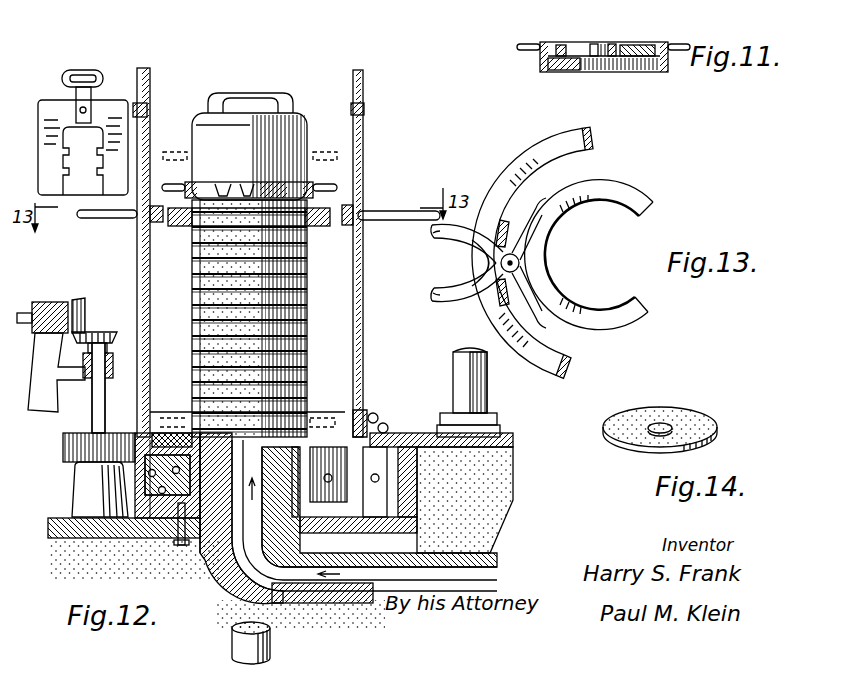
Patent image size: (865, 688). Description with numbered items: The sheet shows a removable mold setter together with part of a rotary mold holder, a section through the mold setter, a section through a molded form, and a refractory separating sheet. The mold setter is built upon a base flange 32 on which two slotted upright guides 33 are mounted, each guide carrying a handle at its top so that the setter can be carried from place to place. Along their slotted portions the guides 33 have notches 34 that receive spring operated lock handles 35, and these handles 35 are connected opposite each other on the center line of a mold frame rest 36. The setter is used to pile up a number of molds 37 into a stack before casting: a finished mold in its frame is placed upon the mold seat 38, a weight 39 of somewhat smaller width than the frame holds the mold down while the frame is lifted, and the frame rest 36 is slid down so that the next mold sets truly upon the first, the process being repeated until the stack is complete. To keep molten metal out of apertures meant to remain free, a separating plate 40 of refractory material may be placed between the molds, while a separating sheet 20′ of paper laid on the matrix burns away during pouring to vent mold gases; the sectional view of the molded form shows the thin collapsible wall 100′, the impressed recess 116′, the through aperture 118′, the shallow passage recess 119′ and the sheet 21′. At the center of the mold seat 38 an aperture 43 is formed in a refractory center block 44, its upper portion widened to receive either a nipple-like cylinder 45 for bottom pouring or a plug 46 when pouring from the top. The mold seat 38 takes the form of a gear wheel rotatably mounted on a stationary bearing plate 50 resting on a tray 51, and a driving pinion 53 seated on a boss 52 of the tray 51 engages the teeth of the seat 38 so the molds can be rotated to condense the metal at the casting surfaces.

In FIG. 12, the slotted upright guides 33 is at (40, 104).
In FIG. 13, the slotted upright guides 33 is at (506, 222).
In FIG. 12, the notches 34 is at (97, 170).
In FIG. 13, the notches 34 is at (507, 283).
In FIG. 12, the spring operated lock handles 35 is at (113, 218).
In FIG. 13, the spring operated lock handles 35 is at (440, 294).
In FIG. 12, the mold frame rest 36 is at (318, 227).
In FIG. 13, the mold frame rest 36 is at (547, 236).
In FIG. 12, the molds 37 is at (294, 326).
In FIG. 12, the mold seat 38 is at (193, 438).
In FIG. 12, the weight 39 is at (247, 128).
In FIG. 12, the separating plate 40 is at (205, 300).
In FIG. 12, the base flange 32 is at (367, 412).
In FIG. 13, the base flange 32 is at (561, 378).
In FIG. 12, the contact pin 21′ is at (332, 184).
In FIG. 11, the contact pin 21′ is at (540, 48).
In FIG. 12, the aperture 43 is at (250, 470).
In FIG. 12, the center block 44 is at (222, 535).
In FIG. 12, the nipple-like cylinder 45 is at (176, 522).
In FIG. 12, the plug 46 is at (272, 645).
In FIG. 12, the stationary bearing plate 50 is at (145, 520).
In FIG. 12, the tray 51 is at (410, 505).
In FIG. 12, the boss 52 is at (72, 492).
In FIG. 12, the driving pinion 53 is at (63, 452).
In FIG. 11, the separating sheet 20′ is at (575, 58).
In FIG. 11, the fuse element 100′ is at (570, 57).
In FIG. 11, the terminal block 116′ is at (559, 45).
In FIG. 11, the indicator 118′ is at (613, 45).
In FIG. 11, the spring 119′ is at (642, 45).